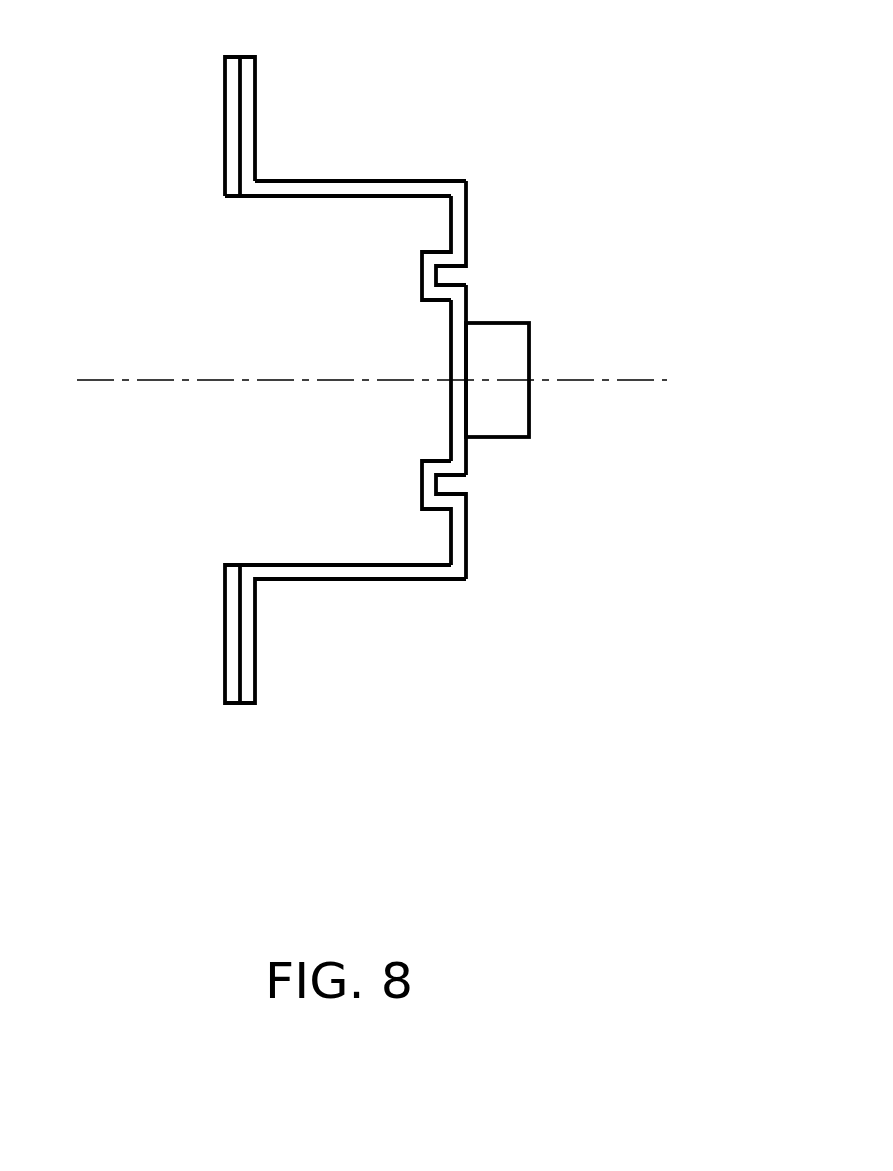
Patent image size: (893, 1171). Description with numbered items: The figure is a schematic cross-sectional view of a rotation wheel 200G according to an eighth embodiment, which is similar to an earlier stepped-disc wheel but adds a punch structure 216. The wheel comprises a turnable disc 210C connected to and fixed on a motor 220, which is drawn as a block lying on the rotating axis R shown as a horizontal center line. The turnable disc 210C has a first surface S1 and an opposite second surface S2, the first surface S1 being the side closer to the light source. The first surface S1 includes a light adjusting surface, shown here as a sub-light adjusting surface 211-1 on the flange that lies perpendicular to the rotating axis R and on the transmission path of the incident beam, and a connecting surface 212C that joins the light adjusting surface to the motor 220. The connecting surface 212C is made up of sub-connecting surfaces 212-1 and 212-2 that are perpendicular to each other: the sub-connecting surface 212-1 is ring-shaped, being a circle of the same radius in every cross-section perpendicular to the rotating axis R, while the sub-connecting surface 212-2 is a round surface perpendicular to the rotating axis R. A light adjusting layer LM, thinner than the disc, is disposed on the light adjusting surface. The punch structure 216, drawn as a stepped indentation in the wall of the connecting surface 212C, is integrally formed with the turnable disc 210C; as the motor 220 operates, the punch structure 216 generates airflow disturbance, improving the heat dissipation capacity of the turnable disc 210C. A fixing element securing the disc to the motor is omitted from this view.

The rotation wheel 200G is at (722, 870).
The turnable disc 210C is at (426, 55).
The first surface S1 is at (228, 82).
The second surface S2 is at (266, 80).
The sub-light adjusting surface 211-1 is at (250, 142).
The connecting surface 212C is at (580, 141).
The sub-connecting surface 212-1 is at (397, 187).
The sub-connecting surface 212-2 is at (460, 226).
The punch structure 216 is at (428, 488).
The motor 220 is at (513, 352).
The light adjusting layer LM is at (232, 670).
The rotating axis R is at (133, 380).